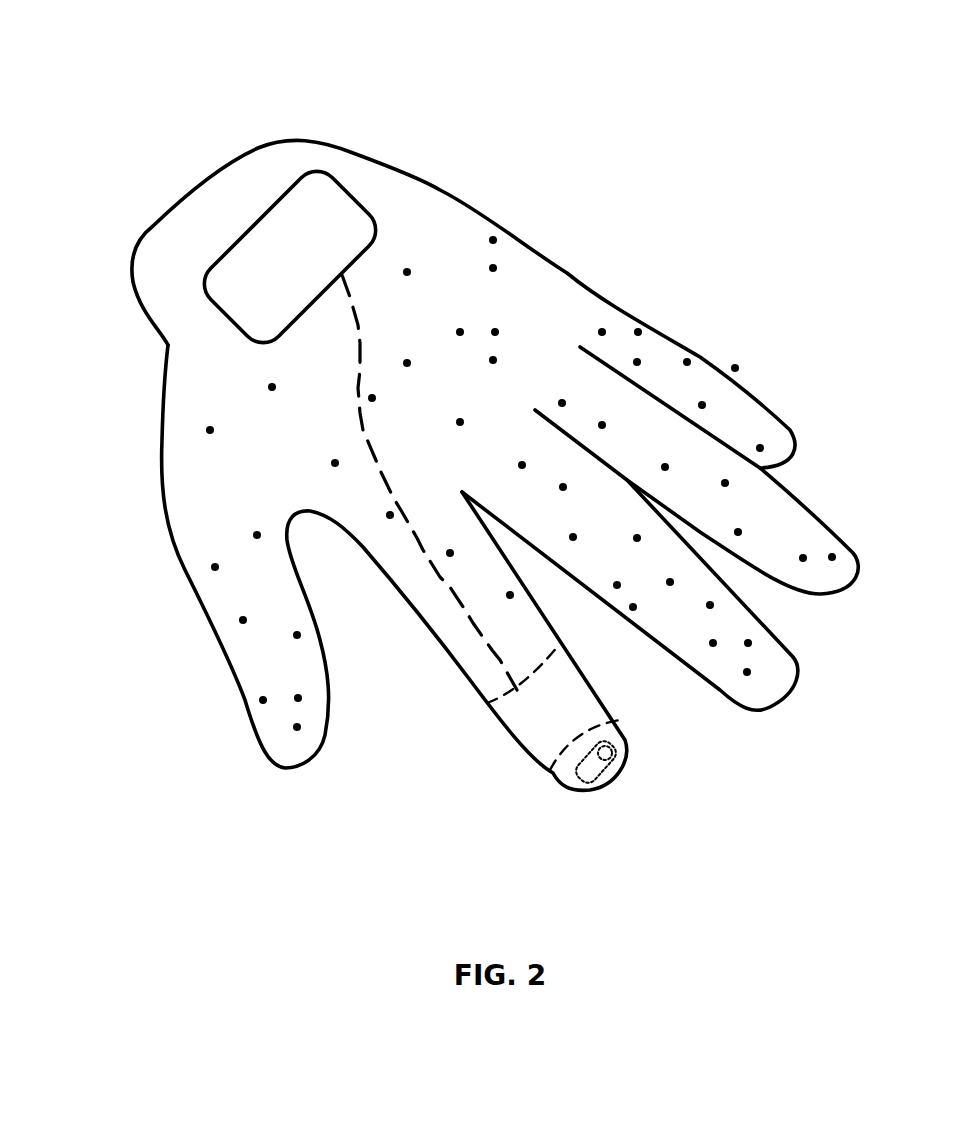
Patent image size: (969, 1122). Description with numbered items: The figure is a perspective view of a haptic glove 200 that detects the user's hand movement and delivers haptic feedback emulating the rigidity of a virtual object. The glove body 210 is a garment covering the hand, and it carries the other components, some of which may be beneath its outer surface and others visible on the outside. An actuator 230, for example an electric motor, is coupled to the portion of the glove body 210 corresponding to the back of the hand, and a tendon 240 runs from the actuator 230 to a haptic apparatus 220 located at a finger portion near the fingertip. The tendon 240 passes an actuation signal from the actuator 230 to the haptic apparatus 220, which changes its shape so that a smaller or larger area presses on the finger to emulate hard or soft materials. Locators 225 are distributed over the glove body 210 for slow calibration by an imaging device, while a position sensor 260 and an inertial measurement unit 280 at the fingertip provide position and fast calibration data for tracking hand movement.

The haptic glove 200 is at (490, 120).
The glove body 210 is at (168, 343).
The haptic apparatus 220 is at (548, 705).
The locators 225 is at (641, 330).
The actuator 230 is at (310, 226).
The tendon 240 is at (357, 380).
The position sensor 260 is at (612, 751).
The inertial measurement unit 280 is at (591, 779).